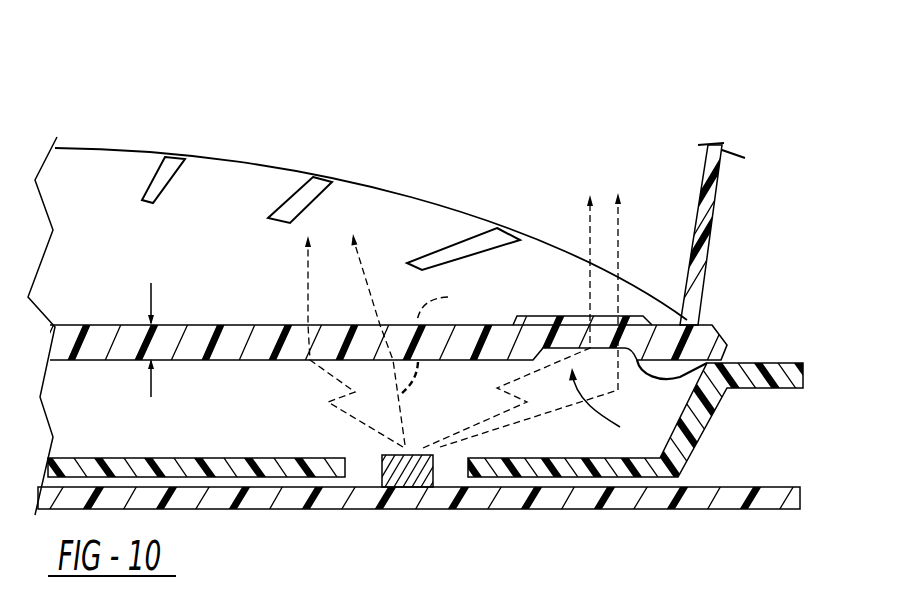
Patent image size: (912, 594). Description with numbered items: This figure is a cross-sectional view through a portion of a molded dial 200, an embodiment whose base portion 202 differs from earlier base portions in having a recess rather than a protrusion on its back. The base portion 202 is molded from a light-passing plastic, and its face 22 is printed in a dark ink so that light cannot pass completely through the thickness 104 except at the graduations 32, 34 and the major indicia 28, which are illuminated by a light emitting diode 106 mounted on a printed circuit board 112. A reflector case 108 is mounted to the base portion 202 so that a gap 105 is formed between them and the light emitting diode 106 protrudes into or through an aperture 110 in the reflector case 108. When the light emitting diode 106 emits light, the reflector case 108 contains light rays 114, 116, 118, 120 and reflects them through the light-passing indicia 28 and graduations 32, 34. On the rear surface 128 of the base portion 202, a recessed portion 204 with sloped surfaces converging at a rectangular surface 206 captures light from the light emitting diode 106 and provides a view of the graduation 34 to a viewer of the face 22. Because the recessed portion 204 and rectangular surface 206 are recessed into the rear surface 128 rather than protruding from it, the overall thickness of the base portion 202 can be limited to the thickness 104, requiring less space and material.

The molded dial 200 is at (157, 95).
The major indicia 28 is at (88, 218).
The graduation 34 is at (173, 182).
The graduation 32 is at (283, 200).
The base portion 202 is at (62, 338).
The face 22 is at (218, 300).
The gap 105 is at (109, 431).
The thickness 104 is at (152, 343).
The rear surface 128 is at (248, 358).
The light ray 116 is at (439, 340).
The light ray 114 is at (374, 430).
The light ray 118 is at (587, 228).
The light ray 120 is at (620, 231).
The recessed portion 204 is at (610, 407).
The rectangular surface 206 is at (712, 358).
The reflector case 108 is at (712, 430).
The aperture 110 is at (352, 467).
The light emitting diode 106 is at (433, 472).
The printed circuit board 112 is at (550, 510).